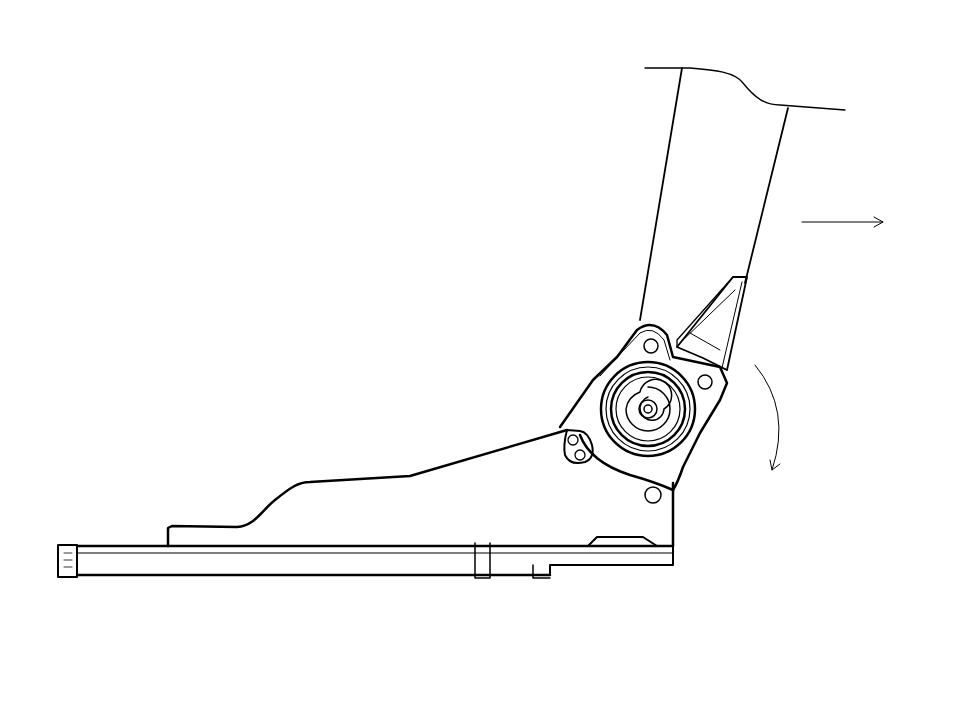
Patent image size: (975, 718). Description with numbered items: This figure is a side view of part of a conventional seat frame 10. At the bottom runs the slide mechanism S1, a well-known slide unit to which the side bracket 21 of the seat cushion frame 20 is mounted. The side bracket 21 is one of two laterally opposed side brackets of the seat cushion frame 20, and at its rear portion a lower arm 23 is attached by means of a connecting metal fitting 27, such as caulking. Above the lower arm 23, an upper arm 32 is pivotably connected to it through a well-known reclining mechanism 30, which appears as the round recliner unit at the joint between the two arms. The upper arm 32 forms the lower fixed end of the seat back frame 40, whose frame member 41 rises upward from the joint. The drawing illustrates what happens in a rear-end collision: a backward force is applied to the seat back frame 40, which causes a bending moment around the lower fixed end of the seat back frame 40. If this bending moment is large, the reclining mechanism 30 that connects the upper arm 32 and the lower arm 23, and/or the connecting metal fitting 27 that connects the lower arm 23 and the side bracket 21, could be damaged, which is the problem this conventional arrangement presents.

The seat frame 10 is at (193, 173).
The seat cushion frame 20 is at (278, 342).
The side bracket 21 is at (408, 473).
The lower arm 23 is at (593, 397).
The connecting metal fitting 27 is at (535, 433).
The reclining mechanism 30 is at (620, 367).
The upper arm 32 is at (628, 338).
The seat back frame 40 is at (490, 98).
The seat back frame 41 is at (662, 175).
The slide mechanism S1 is at (283, 593).